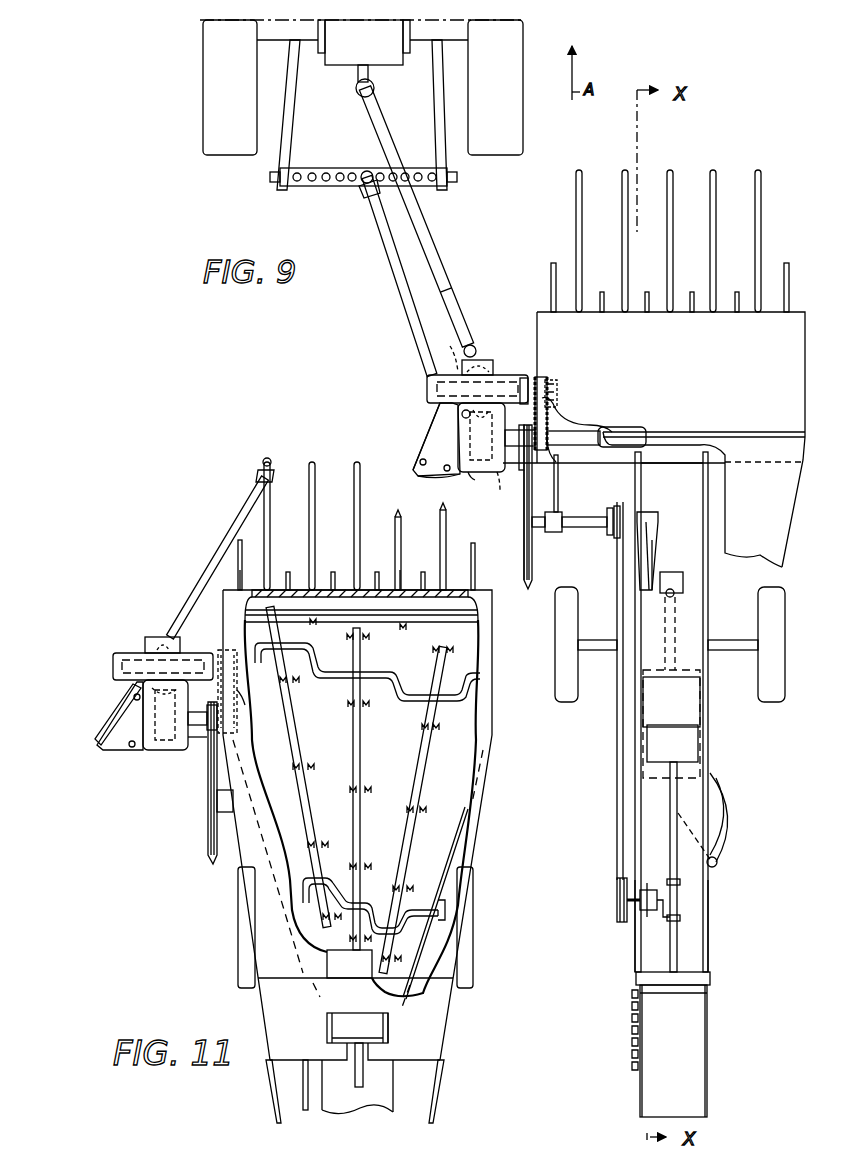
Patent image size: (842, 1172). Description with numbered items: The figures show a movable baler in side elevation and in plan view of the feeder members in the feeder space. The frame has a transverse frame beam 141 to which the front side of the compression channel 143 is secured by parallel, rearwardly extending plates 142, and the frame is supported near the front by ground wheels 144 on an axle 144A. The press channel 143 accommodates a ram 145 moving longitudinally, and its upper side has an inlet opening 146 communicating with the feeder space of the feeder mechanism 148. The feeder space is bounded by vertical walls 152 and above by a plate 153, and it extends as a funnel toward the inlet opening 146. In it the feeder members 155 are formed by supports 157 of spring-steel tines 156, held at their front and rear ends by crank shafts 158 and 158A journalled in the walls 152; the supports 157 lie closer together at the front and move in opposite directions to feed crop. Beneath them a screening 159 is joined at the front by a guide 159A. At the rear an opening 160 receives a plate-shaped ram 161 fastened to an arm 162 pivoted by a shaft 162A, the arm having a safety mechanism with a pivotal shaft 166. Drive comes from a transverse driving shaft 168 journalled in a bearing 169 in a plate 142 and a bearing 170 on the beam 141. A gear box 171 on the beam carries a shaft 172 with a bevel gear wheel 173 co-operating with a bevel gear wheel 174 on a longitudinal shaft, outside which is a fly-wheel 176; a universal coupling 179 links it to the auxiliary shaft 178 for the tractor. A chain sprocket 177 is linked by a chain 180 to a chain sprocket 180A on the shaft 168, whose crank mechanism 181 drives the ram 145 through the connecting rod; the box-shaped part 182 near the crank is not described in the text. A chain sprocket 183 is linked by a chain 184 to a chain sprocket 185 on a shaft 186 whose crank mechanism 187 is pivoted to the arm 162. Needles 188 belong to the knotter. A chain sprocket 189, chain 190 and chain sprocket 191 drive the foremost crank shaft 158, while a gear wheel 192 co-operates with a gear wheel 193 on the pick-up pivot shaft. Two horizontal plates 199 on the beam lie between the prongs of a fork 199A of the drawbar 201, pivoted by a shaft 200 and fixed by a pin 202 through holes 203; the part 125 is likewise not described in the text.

In FIG. 9, the pivot pin 125 is at (452, 360).
In FIG. 9, the frame beam 141 is at (683, 464).
In FIG. 11, the frame beam 141 is at (198, 740).
In FIG. 9, the plates 142 is at (637, 478).
In FIG. 9, the compression channel 143 is at (708, 934).
In FIG. 11, the compression channel 143 is at (393, 1088).
In FIG. 9, the ground wheels 144 is at (565, 703).
In FIG. 11, the ground wheels 144 is at (238, 958).
In FIG. 9, the axle 144A is at (740, 640).
In FIG. 9, the ram 145 is at (702, 766).
In FIG. 9, the inlet opening 146 is at (704, 686).
In FIG. 11, the inlet opening 146 is at (350, 958).
In FIG. 9, the feeder mechanism 148 is at (537, 310).
In FIG. 11, the feeder mechanism 148 is at (497, 636).
In FIG. 11, the vertical walls 152 is at (268, 1090).
In FIG. 11, the plate 153 is at (490, 738).
In FIG. 11, the feeder members 155 is at (350, 760).
In FIG. 11, the spring-steel tines 156 is at (370, 745).
In FIG. 11, the supports 157 is at (296, 724).
In FIG. 9, the crank shaft 158 is at (558, 396).
In FIG. 11, the crank shaft 158 is at (412, 700).
In FIG. 11, the crank shaft 158A is at (427, 882).
In FIG. 11, the screening 159 is at (392, 640).
In FIG. 9, the guide 159A is at (712, 245).
In FIG. 11, the guide 159A is at (356, 462).
In FIG. 11, the opening 160 is at (392, 1042).
In FIG. 9, the plate-shaped ram 161 is at (700, 734).
In FIG. 11, the plate-shaped ram 161 is at (327, 1028).
In FIG. 9, the arm 162 is at (668, 811).
In FIG. 11, the arm 162 is at (362, 1078).
In FIG. 9, the shaft 162A is at (712, 976).
In FIG. 9, the pivotal shaft 166 is at (680, 882).
In FIG. 9, the driving shaft 168 is at (607, 532).
In FIG. 11, the driving shaft 168 is at (208, 810).
In FIG. 9, the bearing 169 is at (639, 516).
In FIG. 9, the bearing 170 is at (553, 533).
In FIG. 9, the gear box 171 is at (476, 480).
In FIG. 11, the gear box 171 is at (215, 790).
In FIG. 9, the shaft 172 is at (580, 430).
In FIG. 9, the bevel gear wheel 173 is at (500, 478).
In FIG. 9, the bevel gear wheel 174 is at (458, 436).
In FIG. 9, the fly-wheel 176 is at (427, 392).
In FIG. 9, the chain sprocket 177 is at (478, 357).
In FIG. 9, the auxiliary shaft 178 is at (438, 243).
In FIG. 9, the universal coupling 179 is at (521, 466).
In FIG. 9, the chain 180 is at (528, 590).
In FIG. 9, the chain sprocket 180A is at (524, 547).
In FIG. 9, the crank mechanism 181 is at (655, 542).
In FIG. 9, the bearing box 182 is at (683, 586).
In FIG. 9, the chain sprocket 183 is at (616, 540).
In FIG. 11, the chain 184 is at (305, 1066).
In FIG. 9, the chain sprocket 185 is at (617, 905).
In FIG. 9, the shaft 186 is at (640, 908).
In FIG. 9, the crank mechanism 187 is at (660, 918).
In FIG. 9, the needles 188 is at (617, 848).
In FIG. 9, the chain sprocket 189 is at (556, 465).
In FIG. 11, the chain sprocket 189 is at (232, 722).
In FIG. 9, the chain 190 is at (565, 414).
In FIG. 11, the chain 190 is at (240, 700).
In FIG. 9, the chain sprocket 191 is at (548, 385).
In FIG. 11, the chain sprocket 191 is at (226, 650).
In FIG. 9, the gear wheel 192 is at (557, 490).
In FIG. 9, the gear wheel 193 is at (530, 376).
In FIG. 9, the horizontal plates 199 is at (440, 432).
In FIG. 11, the horizontal plates 199 is at (137, 752).
In FIG. 11, the fork 199A is at (122, 705).
In FIG. 11, the shaft 200 is at (118, 710).
In FIG. 9, the drawbar 201 is at (380, 237).
In FIG. 11, the drawbar 201 is at (234, 520).
In FIG. 9, the pin 202 is at (457, 478).
In FIG. 11, the pin 202 is at (100, 750).
In FIG. 9, the holes 203 is at (412, 472).